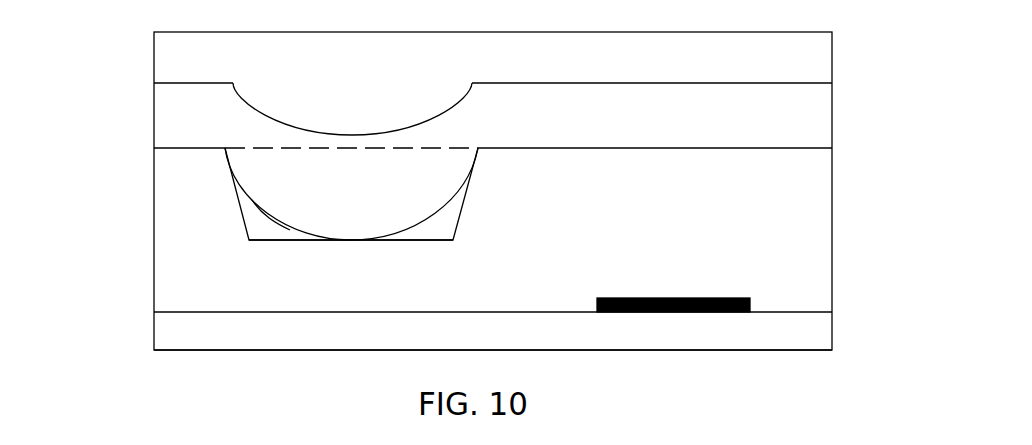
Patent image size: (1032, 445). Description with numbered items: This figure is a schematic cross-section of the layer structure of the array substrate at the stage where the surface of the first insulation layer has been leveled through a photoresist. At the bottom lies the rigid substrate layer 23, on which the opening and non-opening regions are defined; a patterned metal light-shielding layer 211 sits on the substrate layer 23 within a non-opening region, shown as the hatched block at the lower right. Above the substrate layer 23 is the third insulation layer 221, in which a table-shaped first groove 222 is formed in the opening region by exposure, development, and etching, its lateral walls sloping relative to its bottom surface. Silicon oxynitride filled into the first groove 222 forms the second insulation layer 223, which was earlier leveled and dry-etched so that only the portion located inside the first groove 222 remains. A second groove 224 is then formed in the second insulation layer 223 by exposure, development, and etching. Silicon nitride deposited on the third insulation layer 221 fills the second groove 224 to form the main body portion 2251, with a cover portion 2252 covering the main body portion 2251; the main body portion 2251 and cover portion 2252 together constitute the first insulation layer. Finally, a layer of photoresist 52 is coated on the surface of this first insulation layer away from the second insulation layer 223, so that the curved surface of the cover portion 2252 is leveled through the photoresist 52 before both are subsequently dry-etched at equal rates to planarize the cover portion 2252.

The photoresist 52 is at (154, 62).
The cover portion 2252 is at (252, 127).
The main body portion 2251 is at (252, 178).
The second insulation layer 223 is at (252, 213).
The third insulation layer 221 is at (154, 235).
The second groove 224 is at (273, 222).
The first groove 222 is at (282, 242).
The substrate layer 23 is at (154, 333).
The light-shielding layer 211 is at (683, 298).